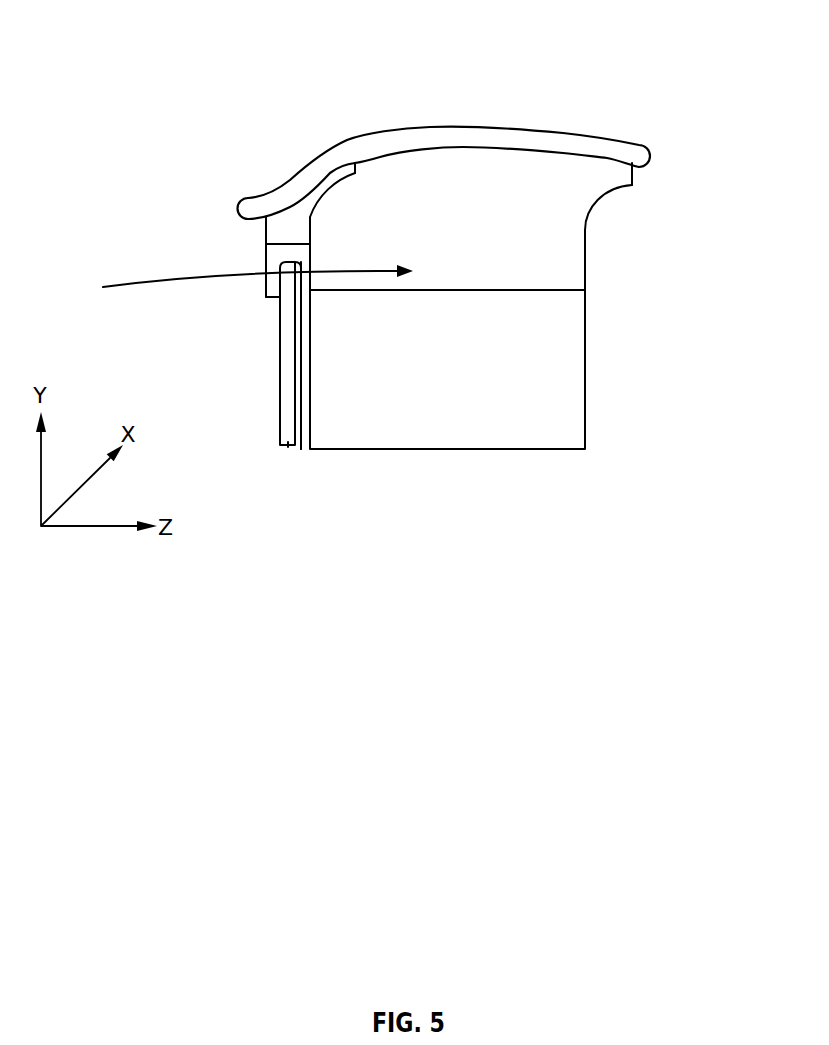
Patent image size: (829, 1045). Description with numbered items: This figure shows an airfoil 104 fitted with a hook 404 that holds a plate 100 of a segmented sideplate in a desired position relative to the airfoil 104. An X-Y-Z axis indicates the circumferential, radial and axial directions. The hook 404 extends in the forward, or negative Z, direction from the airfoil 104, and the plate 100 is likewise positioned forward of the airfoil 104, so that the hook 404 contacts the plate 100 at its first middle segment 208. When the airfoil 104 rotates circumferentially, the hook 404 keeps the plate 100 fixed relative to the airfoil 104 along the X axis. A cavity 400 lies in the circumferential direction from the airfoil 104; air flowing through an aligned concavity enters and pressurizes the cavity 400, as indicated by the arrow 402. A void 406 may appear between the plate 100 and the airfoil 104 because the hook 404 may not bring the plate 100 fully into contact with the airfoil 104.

The cavity 400 is at (547, 220).
The airfoil 104 is at (600, 361).
The first middle segment 208 is at (287, 264).
The arrow 402 is at (258, 268).
The hook 404 is at (267, 296).
The plate 100 is at (288, 447).
The void 406 is at (297, 448).